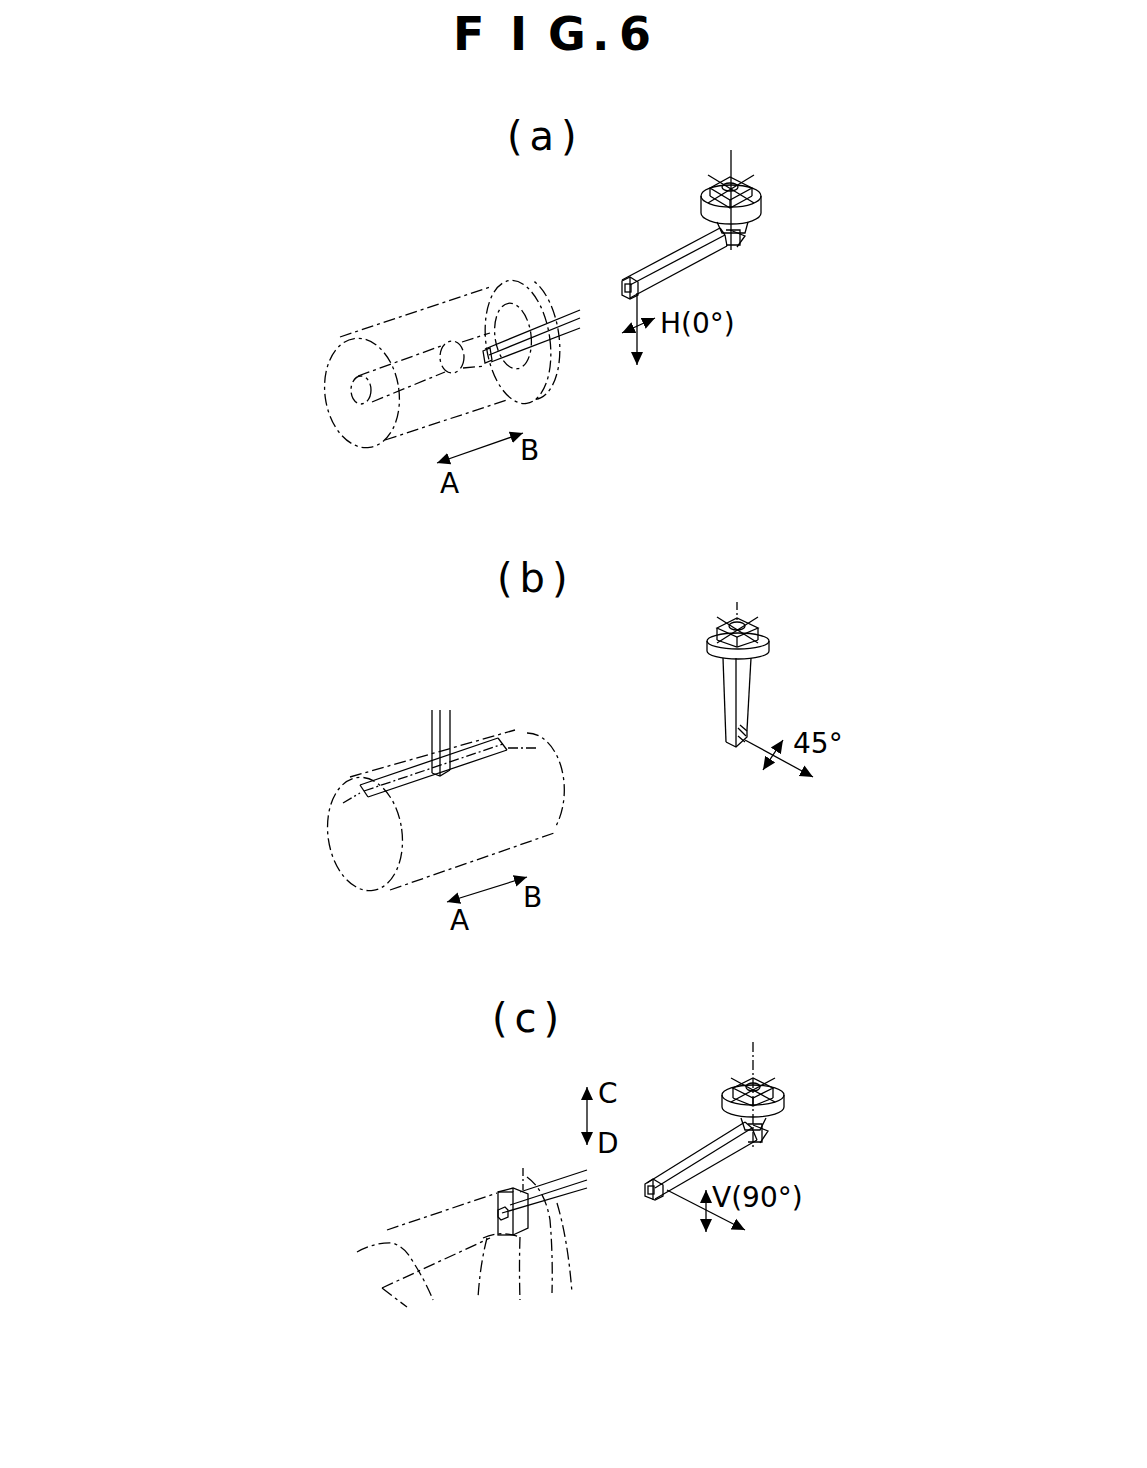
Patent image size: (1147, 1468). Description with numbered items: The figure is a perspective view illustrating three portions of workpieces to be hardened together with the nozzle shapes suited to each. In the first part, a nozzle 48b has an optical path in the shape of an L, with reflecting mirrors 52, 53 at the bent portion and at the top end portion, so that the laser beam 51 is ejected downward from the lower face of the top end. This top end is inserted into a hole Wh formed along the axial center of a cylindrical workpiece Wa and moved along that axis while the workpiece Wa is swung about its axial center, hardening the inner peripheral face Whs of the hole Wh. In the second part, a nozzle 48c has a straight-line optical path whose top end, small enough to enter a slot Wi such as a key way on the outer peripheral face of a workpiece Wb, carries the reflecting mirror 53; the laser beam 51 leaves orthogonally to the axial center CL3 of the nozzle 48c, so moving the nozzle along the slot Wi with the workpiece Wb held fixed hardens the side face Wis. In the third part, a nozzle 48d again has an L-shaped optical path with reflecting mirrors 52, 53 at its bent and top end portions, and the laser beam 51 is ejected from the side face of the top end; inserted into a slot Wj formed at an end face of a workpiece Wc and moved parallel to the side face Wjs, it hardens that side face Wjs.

The nozzle 48b is at (563, 318).
The nozzle 48c is at (452, 720).
The nozzle 48d is at (692, 1150).
The laser beam 51 is at (646, 340).
The reflecting mirror 52 is at (740, 243).
The reflecting mirror 53 is at (636, 288).
The cylindrical workpiece Wa is at (370, 326).
The hole Wh is at (327, 379).
The inner peripheral face Whs is at (486, 402).
The workpiece Wb is at (330, 852).
The slot Wi is at (378, 772).
The side face Wis is at (530, 749).
The workpiece Wc is at (387, 1228).
The slot Wj is at (527, 1165).
The side face Wjs is at (525, 1255).
The axial center CL3 is at (738, 612).